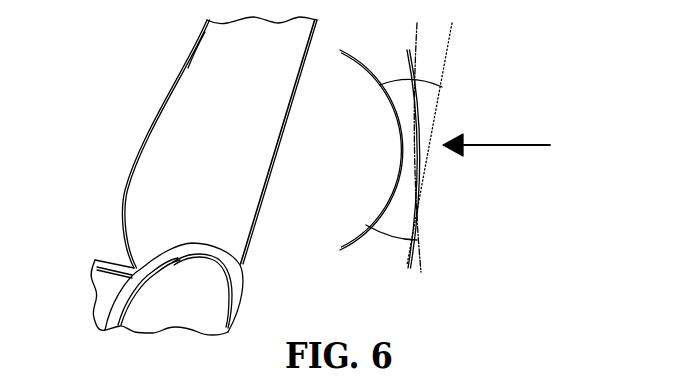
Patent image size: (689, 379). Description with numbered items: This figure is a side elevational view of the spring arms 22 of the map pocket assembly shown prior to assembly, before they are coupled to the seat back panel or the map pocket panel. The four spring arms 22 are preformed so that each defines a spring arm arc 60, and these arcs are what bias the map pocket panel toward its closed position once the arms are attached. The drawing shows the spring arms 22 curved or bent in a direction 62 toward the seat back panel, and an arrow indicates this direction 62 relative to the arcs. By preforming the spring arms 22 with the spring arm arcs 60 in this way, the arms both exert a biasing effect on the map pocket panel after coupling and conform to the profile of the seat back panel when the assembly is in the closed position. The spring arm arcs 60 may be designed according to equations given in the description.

The spring arm 22 is at (392, 192).
The spring arm arc 60 is at (429, 84).
The direction 62 is at (498, 145).